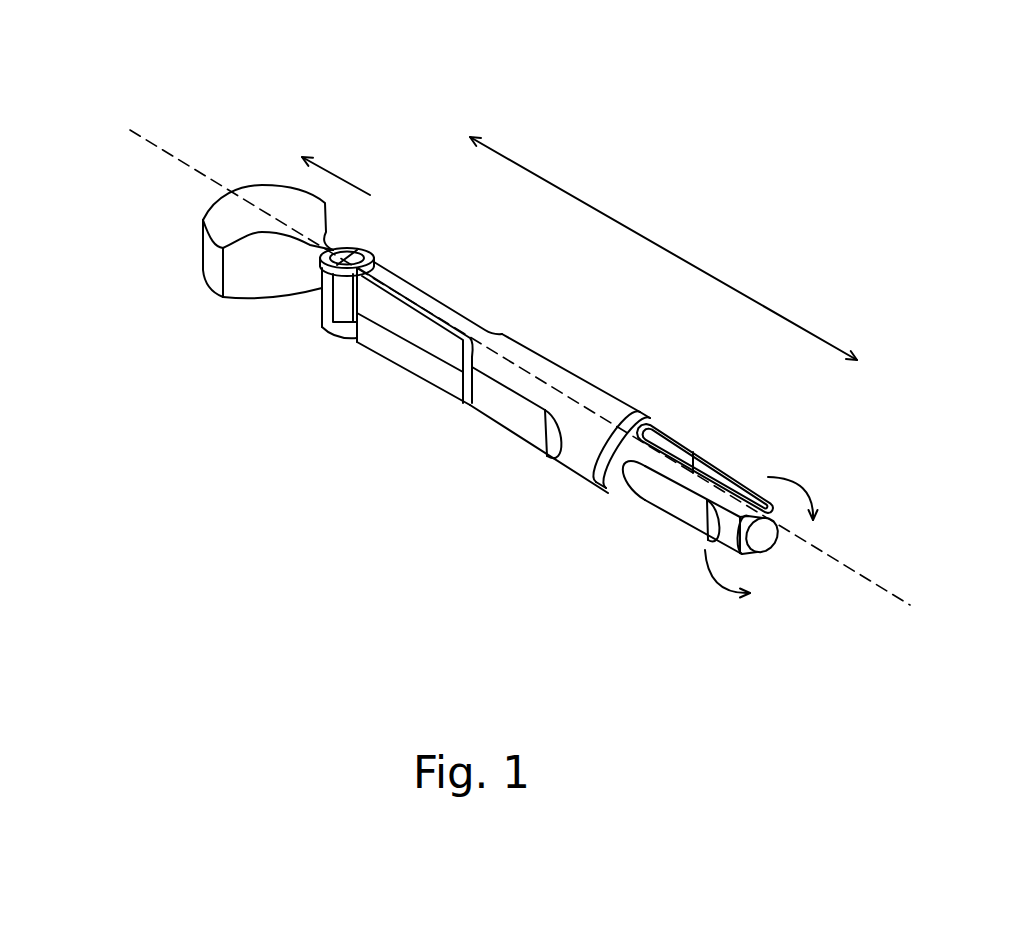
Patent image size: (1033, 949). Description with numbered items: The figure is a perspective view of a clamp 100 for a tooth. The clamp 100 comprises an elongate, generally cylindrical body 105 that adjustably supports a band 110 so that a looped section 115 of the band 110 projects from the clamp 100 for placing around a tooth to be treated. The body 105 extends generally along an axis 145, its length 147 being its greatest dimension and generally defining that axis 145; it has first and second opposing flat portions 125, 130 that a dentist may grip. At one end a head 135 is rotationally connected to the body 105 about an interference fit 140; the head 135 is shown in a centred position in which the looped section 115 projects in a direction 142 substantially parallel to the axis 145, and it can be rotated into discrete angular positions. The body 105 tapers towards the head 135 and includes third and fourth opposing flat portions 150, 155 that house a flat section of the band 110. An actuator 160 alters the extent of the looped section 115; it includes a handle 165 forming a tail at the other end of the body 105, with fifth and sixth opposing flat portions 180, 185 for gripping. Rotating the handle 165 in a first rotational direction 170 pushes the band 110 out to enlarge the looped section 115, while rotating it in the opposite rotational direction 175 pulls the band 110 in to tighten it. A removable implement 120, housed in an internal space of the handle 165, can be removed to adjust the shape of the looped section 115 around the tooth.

The clamp 100 is at (110, 96).
The body 105 is at (558, 380).
The band 110 is at (255, 287).
The looped section 115 is at (238, 223).
The removable implement 120 is at (755, 505).
The first flat portion 125 is at (510, 425).
The second flat portion 130 is at (600, 382).
The head 135 is at (345, 257).
The interference fit 140 is at (375, 252).
The direction 142 is at (340, 173).
The axis 145 is at (873, 580).
The length 147 is at (633, 230).
The third flat portion 150 is at (412, 360).
The fourth flat portion 155 is at (470, 320).
The actuator 160 is at (655, 447).
The handle 165 is at (655, 466).
The first rotational direction 170 is at (803, 480).
The opposite rotational direction 175 is at (723, 587).
The fifth flat portion 180 is at (673, 512).
The sixth flat portion 185 is at (710, 457).